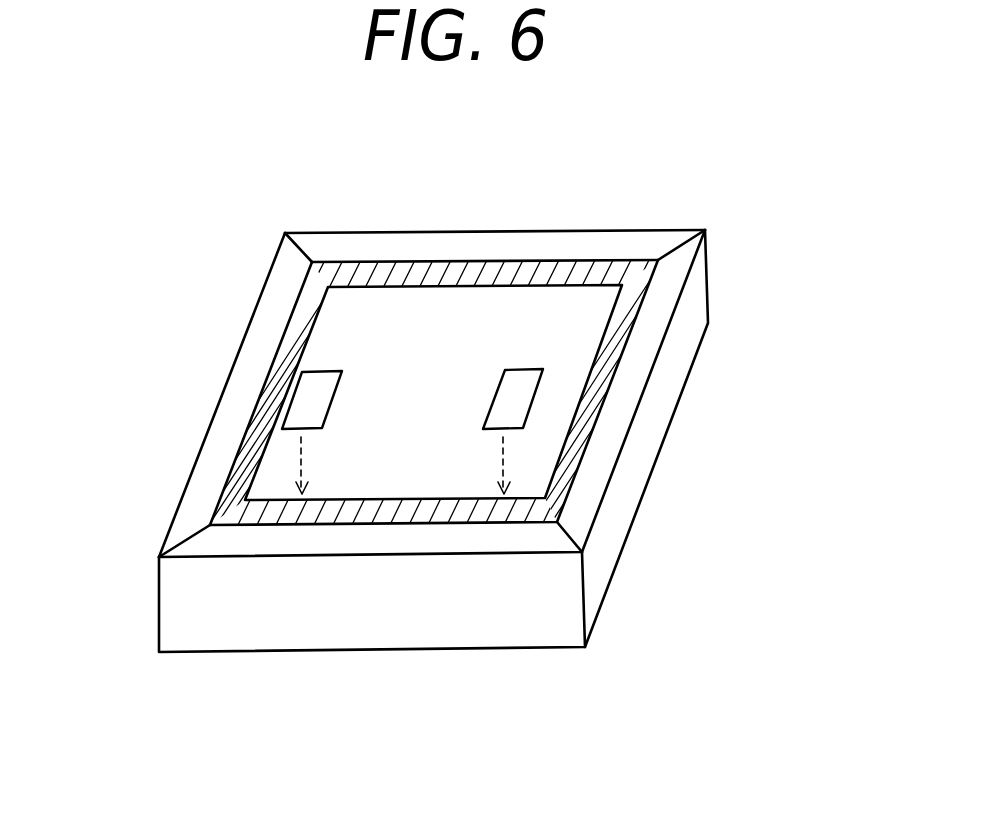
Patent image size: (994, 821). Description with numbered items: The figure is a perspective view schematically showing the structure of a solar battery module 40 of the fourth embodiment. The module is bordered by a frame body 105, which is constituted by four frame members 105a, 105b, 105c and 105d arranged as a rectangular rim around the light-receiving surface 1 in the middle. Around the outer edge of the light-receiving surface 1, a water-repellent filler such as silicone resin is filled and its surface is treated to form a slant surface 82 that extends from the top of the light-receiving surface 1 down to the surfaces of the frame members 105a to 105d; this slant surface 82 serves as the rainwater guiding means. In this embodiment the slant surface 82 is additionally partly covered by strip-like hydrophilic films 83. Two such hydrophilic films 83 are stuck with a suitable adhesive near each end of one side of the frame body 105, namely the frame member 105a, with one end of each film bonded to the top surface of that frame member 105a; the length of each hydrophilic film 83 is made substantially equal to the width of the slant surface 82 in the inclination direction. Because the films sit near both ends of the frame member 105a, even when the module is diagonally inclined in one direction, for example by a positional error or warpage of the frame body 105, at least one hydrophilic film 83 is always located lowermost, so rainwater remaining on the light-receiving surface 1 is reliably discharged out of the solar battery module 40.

The solar battery module 40 is at (745, 115).
The substrate 1 is at (540, 320).
The frame body 105 is at (237, 380).
The frame member 105a is at (397, 620).
The frame member 105b is at (608, 550).
The frame member 105c is at (405, 243).
The frame member 105d is at (205, 457).
The slant surface 82 is at (575, 437).
The hydrophilic film 83 is at (528, 388).